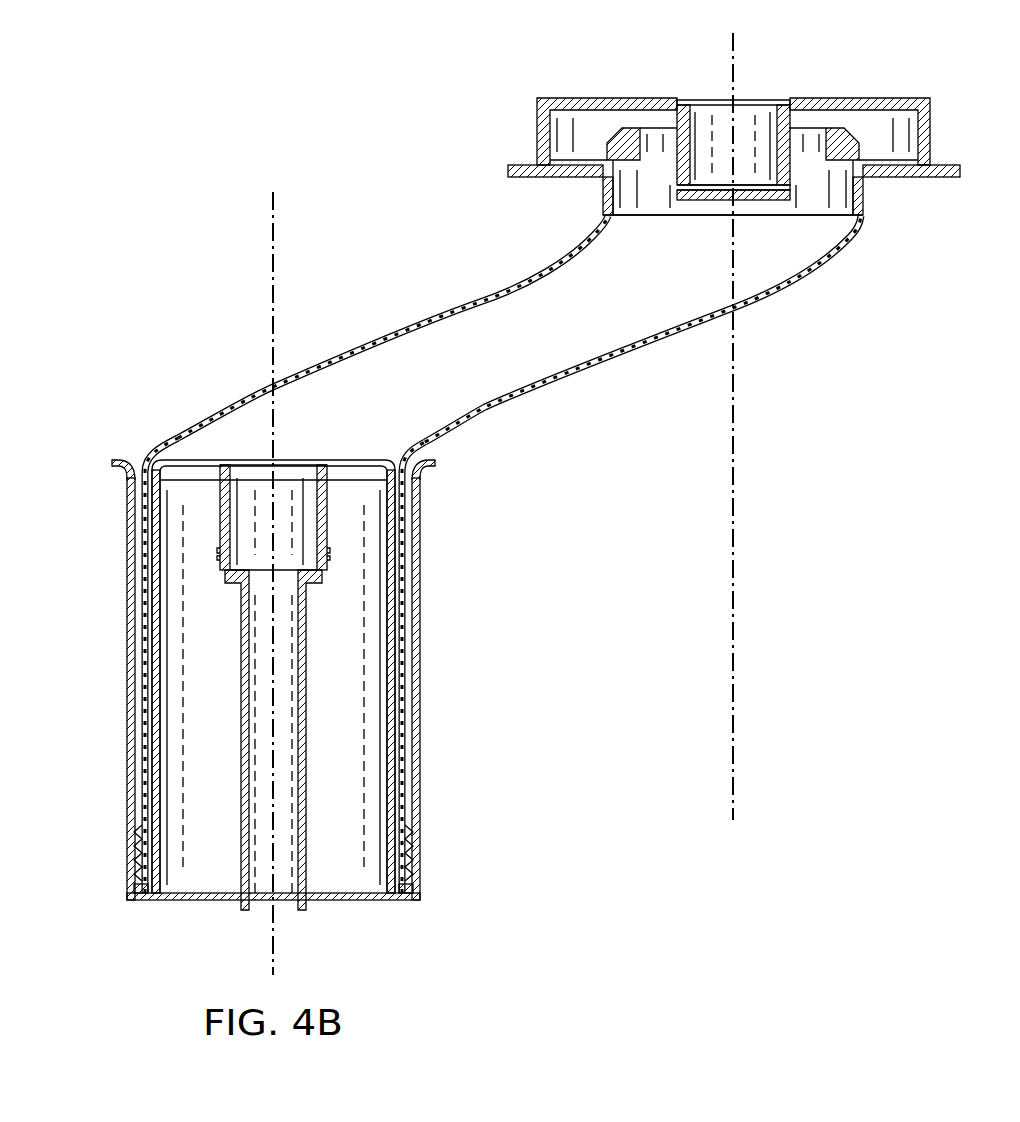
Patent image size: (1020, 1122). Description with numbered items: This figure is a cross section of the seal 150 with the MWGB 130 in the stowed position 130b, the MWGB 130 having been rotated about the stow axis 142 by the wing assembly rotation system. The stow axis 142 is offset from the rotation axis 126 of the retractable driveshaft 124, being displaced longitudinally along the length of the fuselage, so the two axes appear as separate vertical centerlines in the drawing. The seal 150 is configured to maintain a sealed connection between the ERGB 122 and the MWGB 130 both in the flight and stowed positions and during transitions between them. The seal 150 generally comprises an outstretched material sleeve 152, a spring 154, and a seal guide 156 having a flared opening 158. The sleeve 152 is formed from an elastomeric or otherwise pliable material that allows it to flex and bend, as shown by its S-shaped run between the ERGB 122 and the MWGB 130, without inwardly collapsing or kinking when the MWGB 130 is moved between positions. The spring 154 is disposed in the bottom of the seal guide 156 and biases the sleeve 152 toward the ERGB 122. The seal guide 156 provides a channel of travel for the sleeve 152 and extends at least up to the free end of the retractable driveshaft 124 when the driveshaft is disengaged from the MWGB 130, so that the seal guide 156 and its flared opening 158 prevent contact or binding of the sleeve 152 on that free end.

The ERGB 122 is at (273, 676).
The retractable driveshaft 124 is at (239, 760).
The rotation axis 126 is at (272, 200).
The MWGB 130 is at (707, 129).
The stowed position 130b is at (540, 142).
The stow axis 142 is at (738, 45).
The seal 150 is at (503, 554).
The sleeve 152 is at (477, 302).
The spring 154 is at (414, 870).
The seal guide 156 is at (423, 535).
The flared opening 158 is at (112, 472).